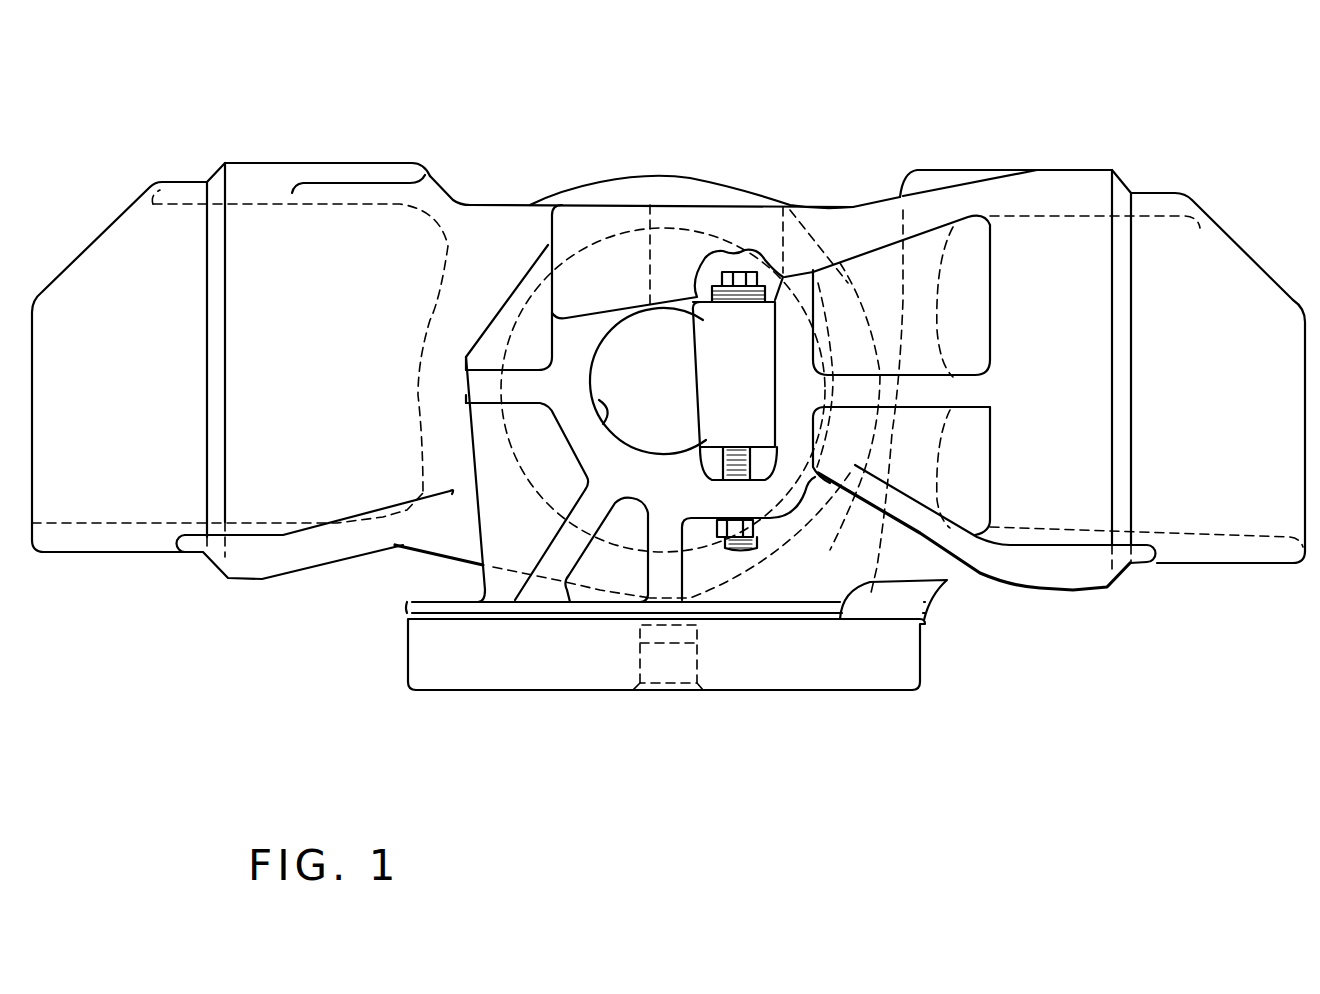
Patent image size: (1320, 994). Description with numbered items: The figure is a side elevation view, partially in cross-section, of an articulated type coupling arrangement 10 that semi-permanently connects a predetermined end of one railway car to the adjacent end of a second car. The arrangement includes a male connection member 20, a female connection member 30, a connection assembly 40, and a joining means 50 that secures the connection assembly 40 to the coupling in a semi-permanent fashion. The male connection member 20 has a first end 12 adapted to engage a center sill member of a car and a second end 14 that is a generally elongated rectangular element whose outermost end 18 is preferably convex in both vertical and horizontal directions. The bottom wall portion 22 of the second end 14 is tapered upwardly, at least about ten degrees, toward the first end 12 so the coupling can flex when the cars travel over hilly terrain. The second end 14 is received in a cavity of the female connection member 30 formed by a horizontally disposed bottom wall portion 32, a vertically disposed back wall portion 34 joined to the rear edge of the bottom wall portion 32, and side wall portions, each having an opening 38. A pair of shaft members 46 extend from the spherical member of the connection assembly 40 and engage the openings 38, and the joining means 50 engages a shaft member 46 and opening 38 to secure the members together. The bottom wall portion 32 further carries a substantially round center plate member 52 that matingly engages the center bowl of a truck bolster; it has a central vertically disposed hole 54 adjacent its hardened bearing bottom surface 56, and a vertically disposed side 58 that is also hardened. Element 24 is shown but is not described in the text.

The articulated type coupling arrangement 10 is at (727, 165).
The first end 12 is at (190, 187).
The second end 14 is at (528, 205).
The outermost end 18 is at (820, 213).
The male connection member 20 is at (432, 152).
The bottom wall portion 22 is at (433, 555).
The right wing plate 24 is at (1161, 197).
The female connection member 30 is at (977, 155).
The bottom wall portion 32 is at (848, 600).
The back wall portion 34 is at (903, 185).
The opening 38 is at (608, 418).
The connection assembly 40 is at (541, 443).
The shaft members 46 is at (683, 381).
The joining means 50 is at (745, 272).
The center plate member 52 is at (432, 648).
The hole 54 is at (658, 677).
The bottom surface 56 is at (762, 693).
The side 58 is at (920, 660).